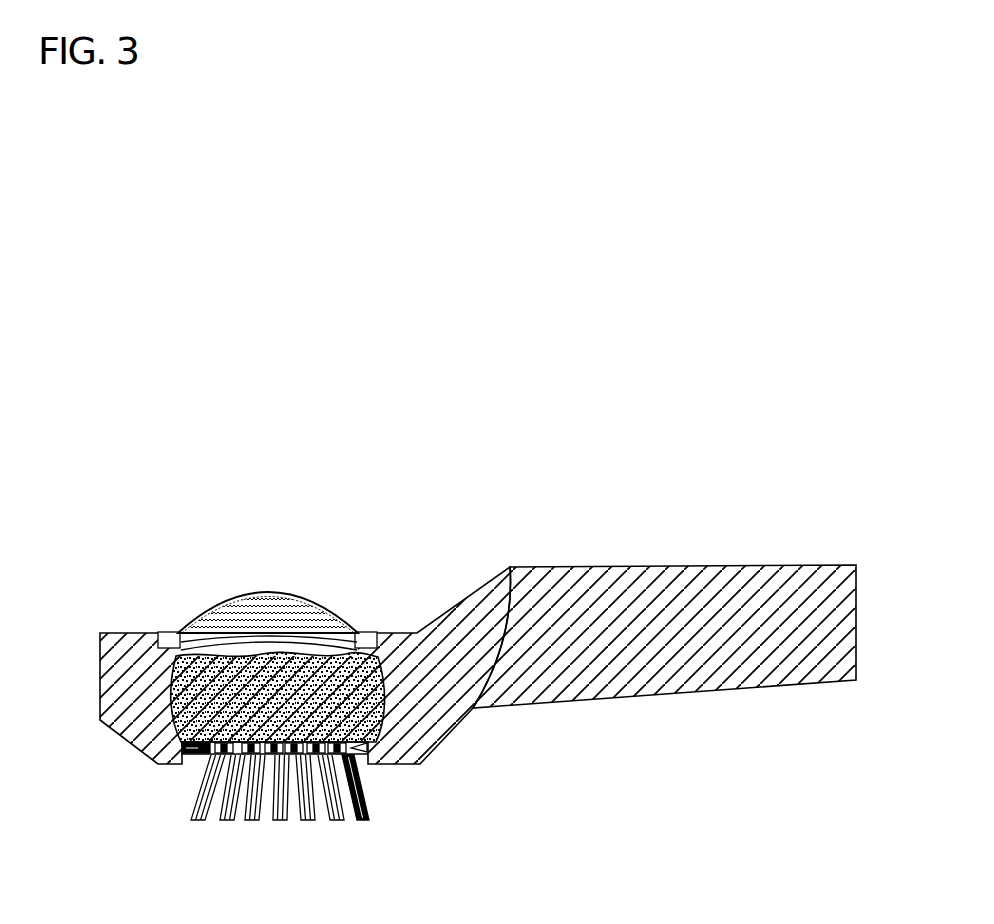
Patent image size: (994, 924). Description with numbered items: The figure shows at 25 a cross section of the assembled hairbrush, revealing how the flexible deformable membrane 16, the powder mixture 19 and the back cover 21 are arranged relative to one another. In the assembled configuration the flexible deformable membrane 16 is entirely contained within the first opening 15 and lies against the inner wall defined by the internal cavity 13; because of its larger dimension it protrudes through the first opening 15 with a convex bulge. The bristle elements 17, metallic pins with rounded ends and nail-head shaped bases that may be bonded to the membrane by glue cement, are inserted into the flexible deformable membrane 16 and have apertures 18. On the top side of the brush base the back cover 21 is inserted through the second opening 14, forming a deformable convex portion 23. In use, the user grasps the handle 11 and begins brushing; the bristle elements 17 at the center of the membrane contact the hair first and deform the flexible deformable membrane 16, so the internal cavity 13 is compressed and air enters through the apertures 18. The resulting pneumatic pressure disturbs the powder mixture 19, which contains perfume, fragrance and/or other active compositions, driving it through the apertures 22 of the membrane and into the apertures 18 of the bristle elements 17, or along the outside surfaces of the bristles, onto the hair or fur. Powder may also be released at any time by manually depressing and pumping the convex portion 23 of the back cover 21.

The handle 11 is at (743, 685).
The internal cavity 13 is at (372, 655).
The second opening 14 is at (358, 627).
The first opening 15 is at (178, 766).
The flexible deformable membrane 16 is at (184, 748).
The bristle elements 17 is at (220, 808).
The apertures 18 is at (280, 822).
The powder mixture 19 is at (200, 693).
The back cover 21 is at (255, 549).
The apertures 22 is at (363, 753).
The convex portion 23 is at (273, 610).
The assembled hairbrush 25 is at (550, 383).